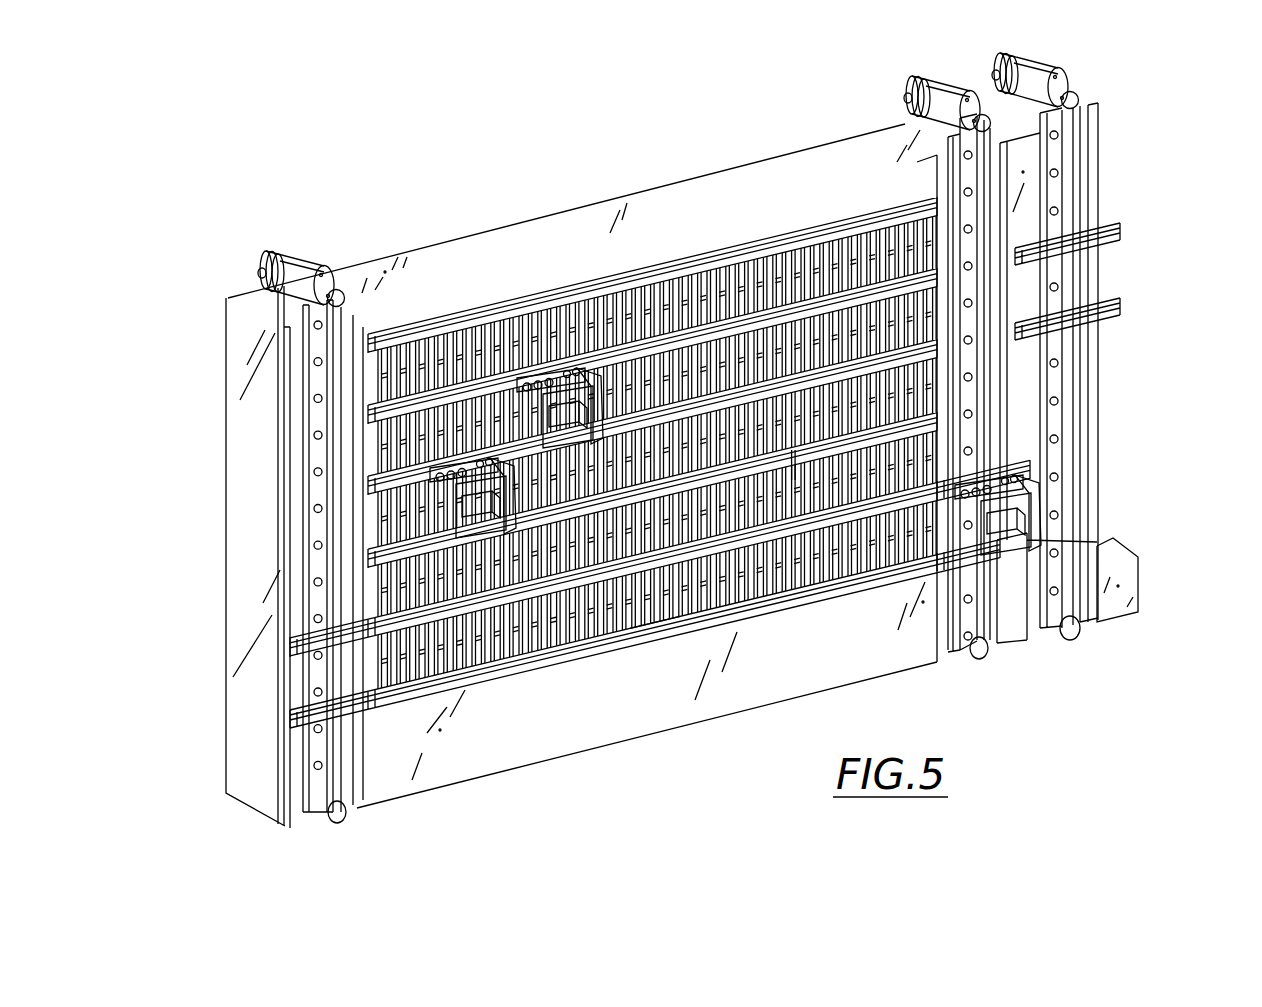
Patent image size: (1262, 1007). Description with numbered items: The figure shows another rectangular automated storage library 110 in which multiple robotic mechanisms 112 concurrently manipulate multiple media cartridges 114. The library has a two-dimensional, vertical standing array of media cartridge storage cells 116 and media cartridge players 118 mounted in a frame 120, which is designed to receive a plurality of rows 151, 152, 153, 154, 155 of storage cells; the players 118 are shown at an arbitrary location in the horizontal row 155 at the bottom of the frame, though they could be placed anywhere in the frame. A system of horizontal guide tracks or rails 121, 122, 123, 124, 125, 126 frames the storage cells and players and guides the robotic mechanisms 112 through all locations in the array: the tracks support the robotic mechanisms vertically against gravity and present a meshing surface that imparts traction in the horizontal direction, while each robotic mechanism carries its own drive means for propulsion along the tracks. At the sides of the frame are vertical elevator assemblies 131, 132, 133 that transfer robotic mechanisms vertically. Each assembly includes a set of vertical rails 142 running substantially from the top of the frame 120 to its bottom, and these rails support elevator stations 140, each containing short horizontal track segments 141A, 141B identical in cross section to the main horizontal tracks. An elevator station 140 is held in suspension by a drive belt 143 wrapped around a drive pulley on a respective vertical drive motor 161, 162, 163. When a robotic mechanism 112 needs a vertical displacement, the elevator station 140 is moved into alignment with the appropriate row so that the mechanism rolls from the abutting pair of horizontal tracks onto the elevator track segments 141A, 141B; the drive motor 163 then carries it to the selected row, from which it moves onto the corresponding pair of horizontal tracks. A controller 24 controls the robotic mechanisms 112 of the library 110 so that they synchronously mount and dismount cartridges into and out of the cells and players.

The rectangular automated storage library 110 is at (424, 122).
The robotic mechanism 112 is at (594, 408).
The media cartridge 114 is at (779, 278).
The media cartridge storage cell 116 is at (790, 488).
The media cartridge player 118 is at (650, 636).
The frame 120 is at (519, 228).
The horizontal guide track 121 is at (370, 340).
The horizontal guide track 122 is at (368, 412).
The horizontal guide track 123 is at (368, 484).
The horizontal guide track 124 is at (368, 553).
The horizontal guide track 125 is at (290, 638).
The horizontal guide track 126 is at (290, 712).
The vertical elevator assembly 131 is at (367, 815).
The vertical elevator assembly 132 is at (970, 666).
The vertical elevator assembly 133 is at (1062, 647).
The elevator station 140 is at (1119, 365).
The elevator track segment 141A is at (1120, 236).
The elevator track segment 141B is at (1120, 310).
The vertical rail 142 is at (1105, 377).
The drive belt 143 is at (1093, 118).
The row of media cartridge storage cells 151 is at (360, 363).
The row of media cartridge storage cells 152 is at (358, 443).
The row of media cartridge storage cells 153 is at (357, 512).
The row of media cartridge storage cells 154 is at (357, 583).
The row of media cartridge storage cells 155 is at (357, 663).
The vertical drive motor 161 is at (305, 255).
The vertical drive motor 162 is at (925, 117).
The vertical drive motor 163 is at (1070, 74).
The controller 24 is at (1140, 566).